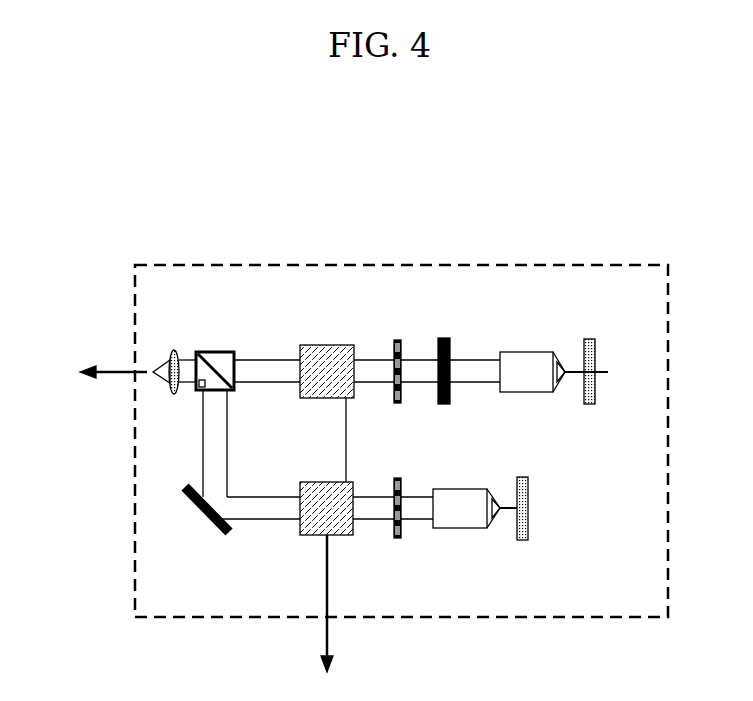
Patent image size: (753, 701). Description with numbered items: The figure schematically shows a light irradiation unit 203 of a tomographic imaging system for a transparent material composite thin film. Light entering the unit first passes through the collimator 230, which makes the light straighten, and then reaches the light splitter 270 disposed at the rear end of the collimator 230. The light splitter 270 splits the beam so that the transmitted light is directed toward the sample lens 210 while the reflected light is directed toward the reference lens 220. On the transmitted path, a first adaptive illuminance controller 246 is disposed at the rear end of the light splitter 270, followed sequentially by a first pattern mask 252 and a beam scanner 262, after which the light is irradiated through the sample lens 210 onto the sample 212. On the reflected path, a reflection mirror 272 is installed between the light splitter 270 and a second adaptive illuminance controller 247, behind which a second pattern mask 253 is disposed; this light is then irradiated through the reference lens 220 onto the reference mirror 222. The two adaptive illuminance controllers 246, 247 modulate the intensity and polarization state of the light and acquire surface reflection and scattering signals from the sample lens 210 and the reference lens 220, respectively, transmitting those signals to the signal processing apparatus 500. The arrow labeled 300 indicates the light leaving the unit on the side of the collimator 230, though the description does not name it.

The light irradiation unit 203 is at (417, 205).
The sample lens 210 is at (525, 352).
The sample 212 is at (596, 395).
The reference lens 220 is at (470, 530).
The reference mirror 222 is at (529, 532).
The collimator 230 is at (179, 348).
The first adaptive illuminance controller 246 is at (330, 345).
The second adaptive illuminance controller 247 is at (313, 482).
The first pattern mask 252 is at (396, 340).
The second pattern mask 253 is at (398, 540).
The beam scanner 262 is at (445, 338).
The light splitter 270 is at (221, 350).
The reflection mirror 272 is at (213, 535).
The output light 300 is at (97, 373).
The signal processing apparatus 500 is at (327, 618).